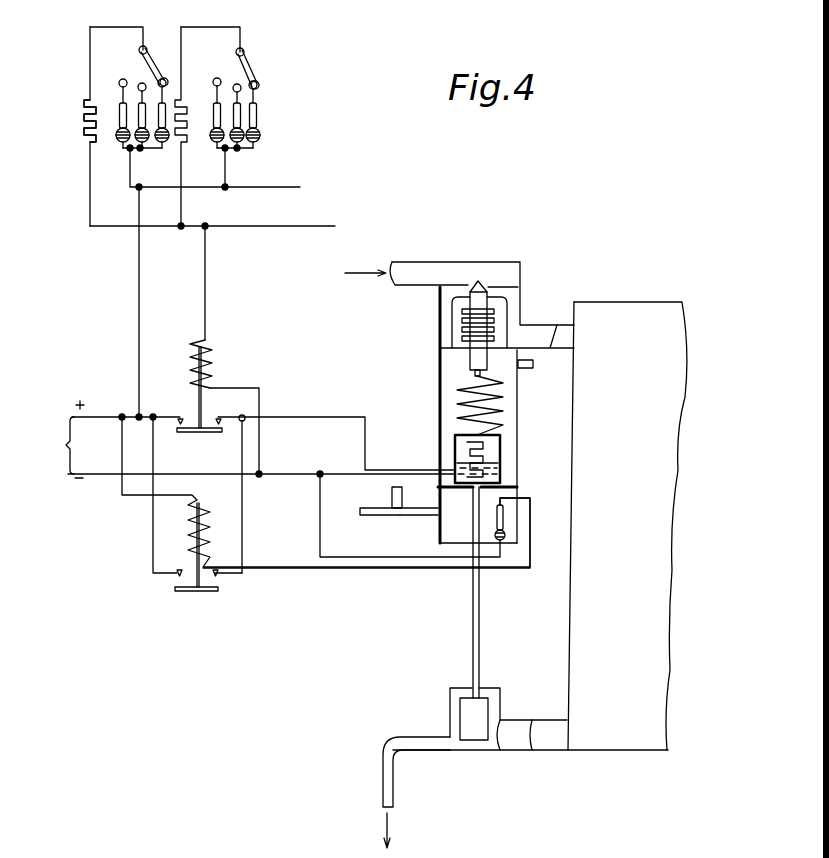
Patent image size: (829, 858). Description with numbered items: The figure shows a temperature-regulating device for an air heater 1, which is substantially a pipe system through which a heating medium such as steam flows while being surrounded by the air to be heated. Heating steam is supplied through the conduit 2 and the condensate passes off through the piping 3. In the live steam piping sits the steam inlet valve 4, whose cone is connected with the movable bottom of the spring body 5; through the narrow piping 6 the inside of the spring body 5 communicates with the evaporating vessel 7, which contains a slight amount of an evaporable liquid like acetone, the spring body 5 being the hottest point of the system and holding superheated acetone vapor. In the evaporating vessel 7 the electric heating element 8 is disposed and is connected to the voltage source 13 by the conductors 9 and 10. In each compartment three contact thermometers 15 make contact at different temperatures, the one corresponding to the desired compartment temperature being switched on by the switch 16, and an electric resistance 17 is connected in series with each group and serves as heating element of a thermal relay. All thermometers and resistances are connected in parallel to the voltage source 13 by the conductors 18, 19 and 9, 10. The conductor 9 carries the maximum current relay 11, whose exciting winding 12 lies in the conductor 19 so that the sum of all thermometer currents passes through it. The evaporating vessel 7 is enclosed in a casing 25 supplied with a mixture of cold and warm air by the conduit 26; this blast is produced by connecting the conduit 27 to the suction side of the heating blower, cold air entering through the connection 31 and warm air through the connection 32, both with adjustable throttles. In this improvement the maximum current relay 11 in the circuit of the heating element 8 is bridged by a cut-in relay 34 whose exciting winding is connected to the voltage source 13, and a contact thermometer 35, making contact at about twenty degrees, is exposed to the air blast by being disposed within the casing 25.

The air heater 1 is at (625, 317).
The conduit 2 is at (404, 272).
The piping 3 is at (386, 774).
The steam inlet valve 4 is at (482, 283).
The spring body 5 is at (492, 320).
The narrow piping 6 is at (500, 398).
The evaporating vessel 7 is at (501, 452).
The electric heating element 8 is at (484, 462).
The conductor 9 is at (96, 417).
The conductor 10 is at (106, 476).
The maximum current relay 11 is at (209, 434).
The exciting winding 12 is at (211, 363).
The voltage source 13 is at (60, 439).
The contact thermometers 15 is at (255, 119).
The switch 16 is at (150, 58).
The electric resistance 17 is at (83, 120).
The conductor 18 is at (138, 308).
The conductor 19 is at (207, 300).
The casing 25 is at (518, 515).
The conduit 26 is at (422, 516).
The conduit 27 is at (531, 368).
The connection 31 is at (368, 516).
The connection 32 is at (392, 492).
The cut-in relay 34 is at (182, 592).
The contact thermometer 35 is at (505, 527).